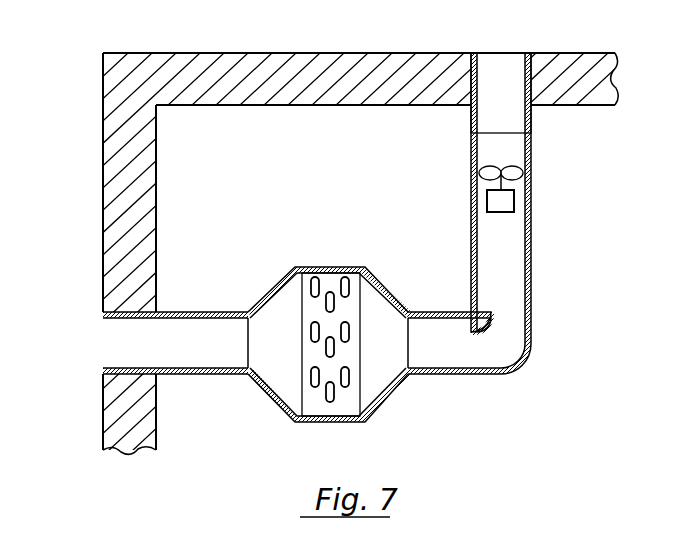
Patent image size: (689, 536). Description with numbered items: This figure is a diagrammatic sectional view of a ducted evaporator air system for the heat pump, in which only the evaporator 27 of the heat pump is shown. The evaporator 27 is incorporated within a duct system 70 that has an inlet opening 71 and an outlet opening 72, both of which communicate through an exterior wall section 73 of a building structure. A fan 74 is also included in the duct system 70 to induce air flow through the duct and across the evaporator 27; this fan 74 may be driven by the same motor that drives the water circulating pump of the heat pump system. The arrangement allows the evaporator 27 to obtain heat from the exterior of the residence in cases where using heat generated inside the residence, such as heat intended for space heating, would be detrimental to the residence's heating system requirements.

The evaporator 27 is at (356, 405).
The duct system 70 is at (540, 284).
The inlet opening 71 is at (117, 350).
The outlet opening 72 is at (505, 62).
The exterior wall section 73 is at (289, 50).
The fan 74 is at (516, 175).